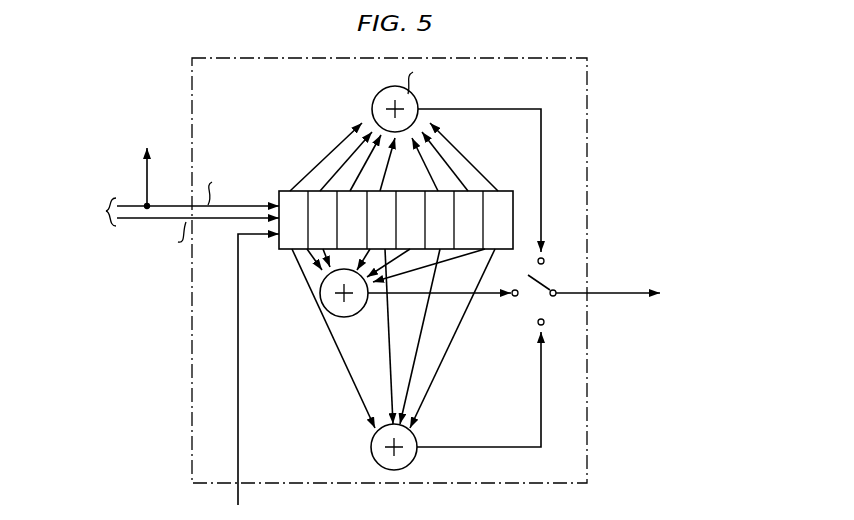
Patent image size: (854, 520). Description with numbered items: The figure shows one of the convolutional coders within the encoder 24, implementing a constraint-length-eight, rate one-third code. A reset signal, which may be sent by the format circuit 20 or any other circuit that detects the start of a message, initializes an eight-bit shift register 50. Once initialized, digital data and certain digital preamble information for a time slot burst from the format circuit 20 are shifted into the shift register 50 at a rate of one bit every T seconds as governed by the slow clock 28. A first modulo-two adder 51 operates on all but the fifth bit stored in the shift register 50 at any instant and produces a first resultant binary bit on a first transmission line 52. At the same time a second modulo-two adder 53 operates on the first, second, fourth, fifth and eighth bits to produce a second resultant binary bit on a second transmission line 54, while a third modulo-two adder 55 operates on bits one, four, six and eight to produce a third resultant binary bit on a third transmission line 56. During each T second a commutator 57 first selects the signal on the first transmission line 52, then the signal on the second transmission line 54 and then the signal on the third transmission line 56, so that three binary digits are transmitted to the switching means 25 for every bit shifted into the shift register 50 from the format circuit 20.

The encoder 24 is at (389, 270).
The format circuit 20 is at (149, 211).
The switching means 25 is at (433, 204).
The slow clock 28 is at (237, 492).
The shift register 50 is at (507, 191).
The first modulo-2 adder 51 is at (376, 103).
The transmission line 52 is at (520, 108).
The second modulo-2 adder 53 is at (358, 313).
The second transmission line 54 is at (492, 296).
The third modulo-2 adder 55 is at (373, 438).
The third transmission line 56 is at (480, 443).
The commutator 57 is at (543, 285).